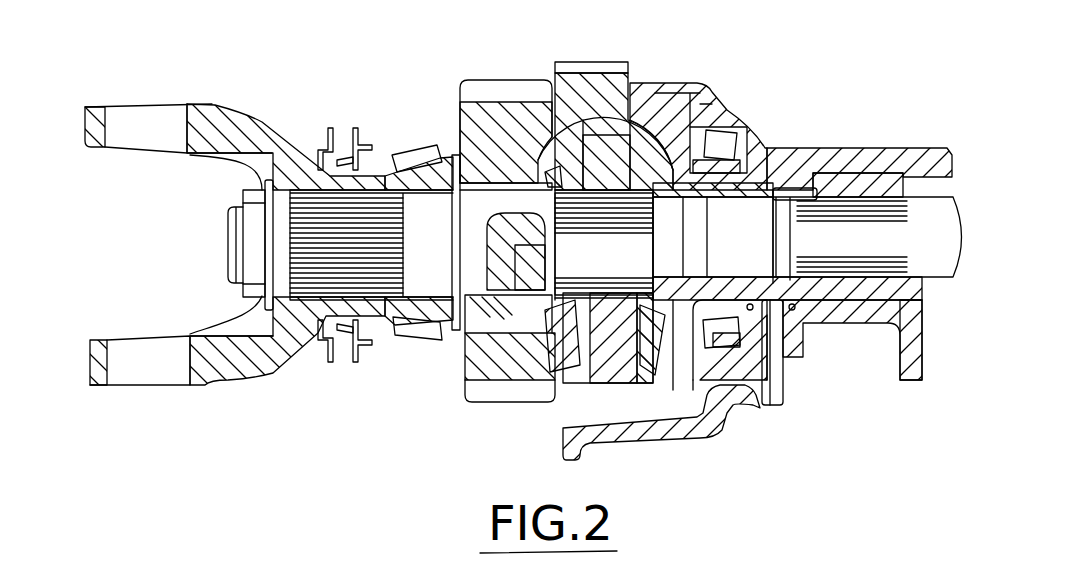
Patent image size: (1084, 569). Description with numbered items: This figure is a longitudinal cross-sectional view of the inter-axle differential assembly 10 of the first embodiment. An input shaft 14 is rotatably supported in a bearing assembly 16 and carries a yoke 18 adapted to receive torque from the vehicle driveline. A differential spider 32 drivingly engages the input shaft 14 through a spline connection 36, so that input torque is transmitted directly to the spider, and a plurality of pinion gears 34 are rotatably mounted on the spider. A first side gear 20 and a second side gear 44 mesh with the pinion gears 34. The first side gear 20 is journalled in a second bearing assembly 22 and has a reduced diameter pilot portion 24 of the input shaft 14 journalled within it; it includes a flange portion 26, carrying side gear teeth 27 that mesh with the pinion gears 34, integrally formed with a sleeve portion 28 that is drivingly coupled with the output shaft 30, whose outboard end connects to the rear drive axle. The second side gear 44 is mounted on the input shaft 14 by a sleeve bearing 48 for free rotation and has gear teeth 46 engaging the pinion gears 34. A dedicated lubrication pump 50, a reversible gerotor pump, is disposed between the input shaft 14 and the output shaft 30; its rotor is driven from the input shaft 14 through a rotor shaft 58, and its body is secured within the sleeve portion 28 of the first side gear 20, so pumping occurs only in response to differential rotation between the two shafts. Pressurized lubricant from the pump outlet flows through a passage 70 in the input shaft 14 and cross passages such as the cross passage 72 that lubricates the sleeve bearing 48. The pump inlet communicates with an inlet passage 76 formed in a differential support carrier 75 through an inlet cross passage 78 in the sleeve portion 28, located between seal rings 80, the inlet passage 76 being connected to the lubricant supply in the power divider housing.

The inter-axle differential assembly 10 is at (580, 402).
The input shaft 14 is at (440, 246).
The bearing assembly 16 is at (413, 147).
The yoke 18 is at (246, 106).
The first side gear 20 is at (763, 175).
The second bearing assembly 22 is at (727, 127).
The reduced diameter pilot portion 24 is at (623, 276).
The flange portion 26 is at (680, 347).
The side gear teeth 27 is at (707, 102).
The sleeve portion 28 is at (873, 187).
The output shaft 30 is at (897, 256).
The differential spider 32 is at (598, 127).
The pinion gears 34 is at (663, 88).
The spline connection 36 is at (620, 135).
The second side gear 44 is at (498, 78).
The gear teeth 46 is at (563, 333).
The sleeve bearing 48 is at (525, 187).
The lubrication pump 50 is at (757, 249).
The rotor shaft 58 is at (698, 242).
The passage 70 is at (525, 242).
The cross passage 72 is at (507, 290).
The differential support carrier 75 is at (907, 358).
The inlet passage 76 is at (777, 392).
The inlet cross passage 78 is at (808, 318).
The seal rings 80 is at (787, 308).